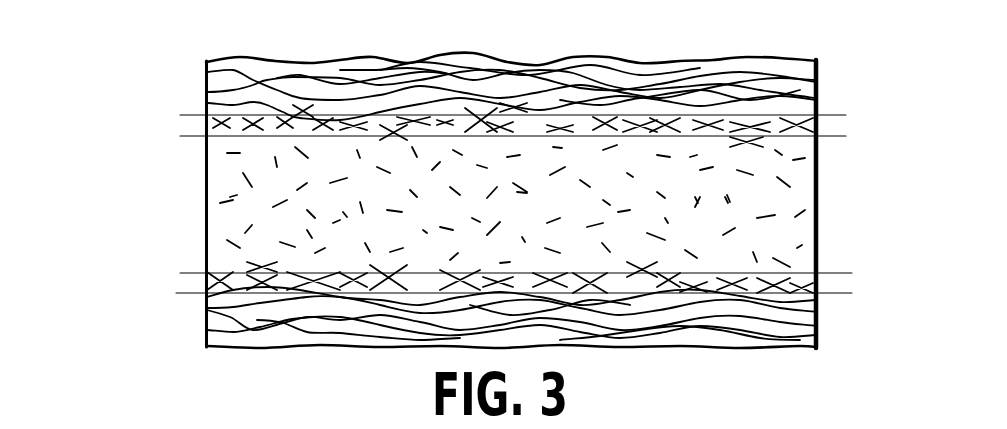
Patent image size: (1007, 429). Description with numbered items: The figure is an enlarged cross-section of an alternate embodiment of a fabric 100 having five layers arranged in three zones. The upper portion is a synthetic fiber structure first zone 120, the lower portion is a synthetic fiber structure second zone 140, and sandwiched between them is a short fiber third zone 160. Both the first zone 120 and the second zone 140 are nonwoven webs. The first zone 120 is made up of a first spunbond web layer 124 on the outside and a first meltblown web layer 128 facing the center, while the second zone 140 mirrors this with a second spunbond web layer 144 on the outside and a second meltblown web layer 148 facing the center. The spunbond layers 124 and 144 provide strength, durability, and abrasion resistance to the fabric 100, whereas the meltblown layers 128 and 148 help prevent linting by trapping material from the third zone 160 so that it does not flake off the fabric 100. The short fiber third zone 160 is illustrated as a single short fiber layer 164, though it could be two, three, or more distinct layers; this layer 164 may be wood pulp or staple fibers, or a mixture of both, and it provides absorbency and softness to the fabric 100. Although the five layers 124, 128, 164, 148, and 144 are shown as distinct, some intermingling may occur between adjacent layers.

The fabric 100 is at (112, 159).
The synthetic fiber structure first zone 120 is at (110, 102).
The first spunbond web layer 124 is at (818, 88).
The first meltblown web layer 128 is at (818, 131).
The short fiber third zone 160 is at (150, 206).
The short fiber layer 164 is at (796, 217).
The synthetic fiber structure second zone 140 is at (128, 280).
The second meltblown web layer 148 is at (818, 288).
The second spunbond web layer 144 is at (800, 330).